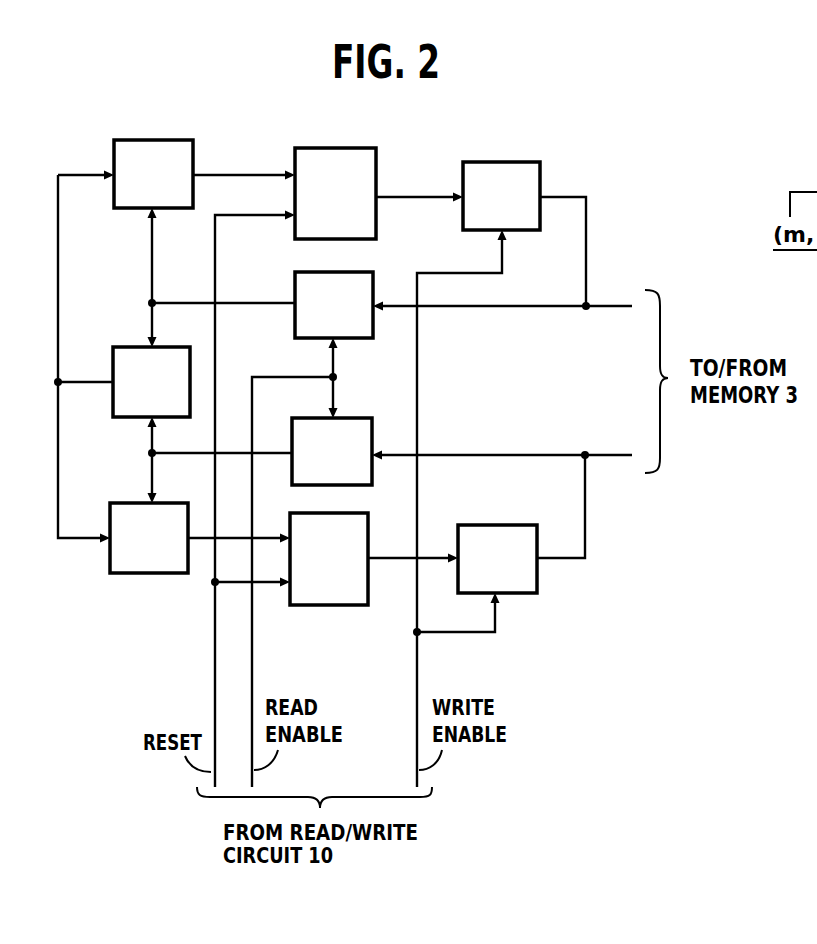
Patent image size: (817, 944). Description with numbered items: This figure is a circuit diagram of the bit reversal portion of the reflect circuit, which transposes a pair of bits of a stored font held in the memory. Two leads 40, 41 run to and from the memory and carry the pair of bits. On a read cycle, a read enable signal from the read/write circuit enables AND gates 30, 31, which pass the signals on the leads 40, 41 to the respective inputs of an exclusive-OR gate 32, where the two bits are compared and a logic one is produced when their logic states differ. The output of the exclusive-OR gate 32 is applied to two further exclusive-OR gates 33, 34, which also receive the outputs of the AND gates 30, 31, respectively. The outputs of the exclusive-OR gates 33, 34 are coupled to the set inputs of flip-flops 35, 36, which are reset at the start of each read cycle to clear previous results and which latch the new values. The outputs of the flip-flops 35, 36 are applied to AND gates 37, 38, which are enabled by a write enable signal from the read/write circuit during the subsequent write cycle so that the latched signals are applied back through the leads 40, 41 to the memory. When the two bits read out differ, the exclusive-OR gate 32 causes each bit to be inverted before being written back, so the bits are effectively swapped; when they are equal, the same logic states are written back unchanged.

The AND gate 30 is at (362, 273).
The AND gate 31 is at (355, 420).
The exclusive-OR gate 32 is at (170, 349).
The exclusive-OR gate 33 is at (140, 142).
The exclusive-OR gate 34 is at (166, 505).
The flip-flop 35 is at (340, 150).
The flip-flop 36 is at (362, 515).
The AND gate 37 is at (495, 163).
The AND gate 38 is at (487, 527).
The lead 40 is at (600, 305).
The lead 41 is at (597, 454).